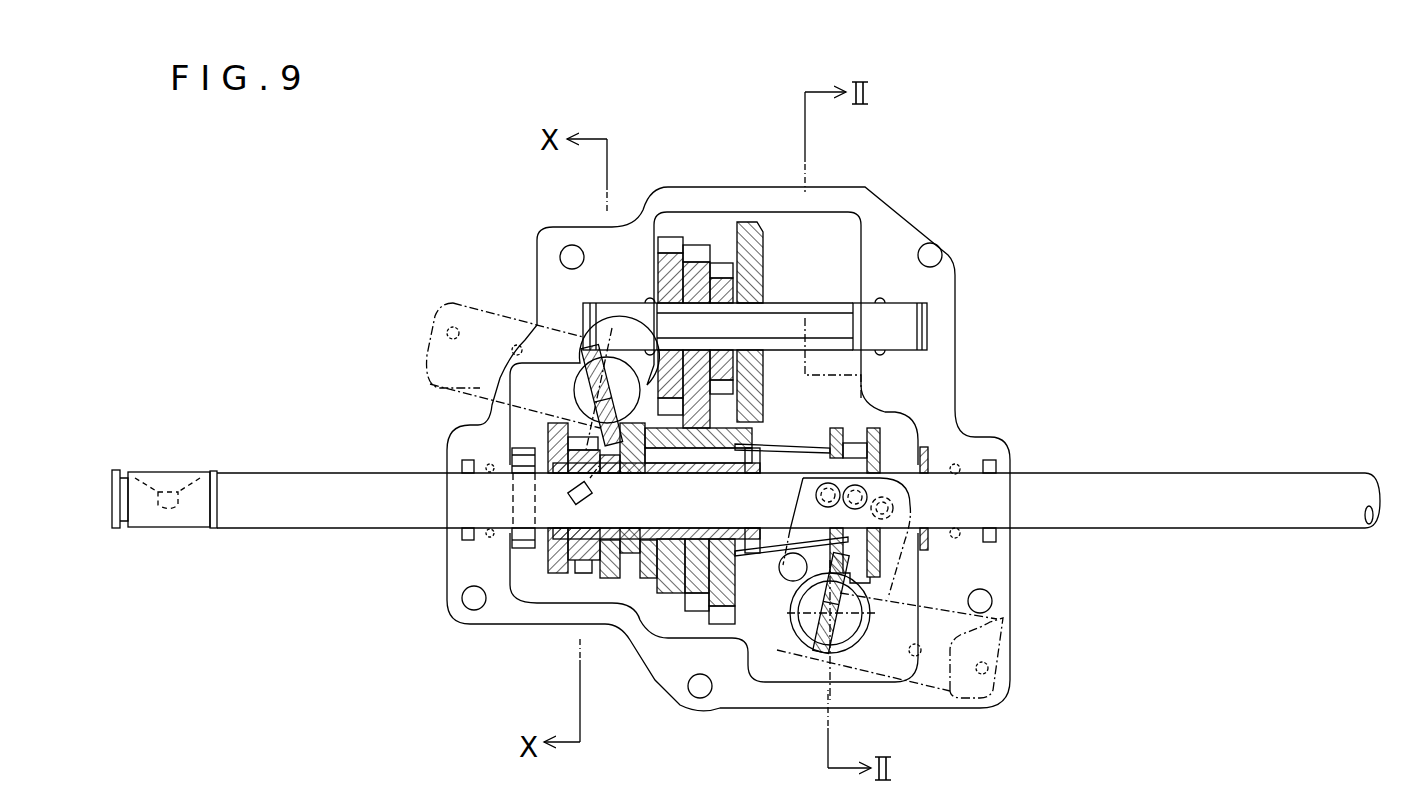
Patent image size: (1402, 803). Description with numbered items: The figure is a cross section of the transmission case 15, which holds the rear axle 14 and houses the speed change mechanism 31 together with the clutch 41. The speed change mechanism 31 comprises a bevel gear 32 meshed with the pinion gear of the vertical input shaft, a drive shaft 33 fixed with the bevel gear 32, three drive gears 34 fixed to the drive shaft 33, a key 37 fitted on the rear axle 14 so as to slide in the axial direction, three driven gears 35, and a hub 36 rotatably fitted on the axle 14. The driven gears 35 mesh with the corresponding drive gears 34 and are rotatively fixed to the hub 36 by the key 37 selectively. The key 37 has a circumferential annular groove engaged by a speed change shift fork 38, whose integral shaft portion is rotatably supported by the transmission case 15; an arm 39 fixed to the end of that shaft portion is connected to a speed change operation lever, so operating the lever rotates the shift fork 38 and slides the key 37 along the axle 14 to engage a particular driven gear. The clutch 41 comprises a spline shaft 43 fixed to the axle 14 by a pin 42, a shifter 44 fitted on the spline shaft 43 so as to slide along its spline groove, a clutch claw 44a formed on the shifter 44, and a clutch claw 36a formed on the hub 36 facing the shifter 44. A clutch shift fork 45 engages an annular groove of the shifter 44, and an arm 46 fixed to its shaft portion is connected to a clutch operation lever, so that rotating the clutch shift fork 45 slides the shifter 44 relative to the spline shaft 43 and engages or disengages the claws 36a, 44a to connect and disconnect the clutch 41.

The rear axle 14 is at (1191, 492).
The transmission case 15 is at (970, 312).
The speed change mechanism 31 is at (840, 232).
The bevel gear 32 is at (760, 266).
The drive shaft 33 is at (787, 318).
The drive gears 34 is at (702, 226).
The driven gears 35 is at (677, 624).
The hub 36 is at (714, 457).
The clutch claw 36a is at (646, 468).
The key 37 is at (870, 427).
The speed change shift fork 38 is at (803, 481).
The arm 39 is at (997, 640).
The clutch 41 is at (591, 585).
The pin 42 is at (512, 455).
The spline shaft 43 is at (528, 550).
The shifter 44 is at (560, 562).
The clutch claw 44a is at (612, 570).
The clutch shift fork 45 is at (580, 476).
The arm 46 is at (478, 327).